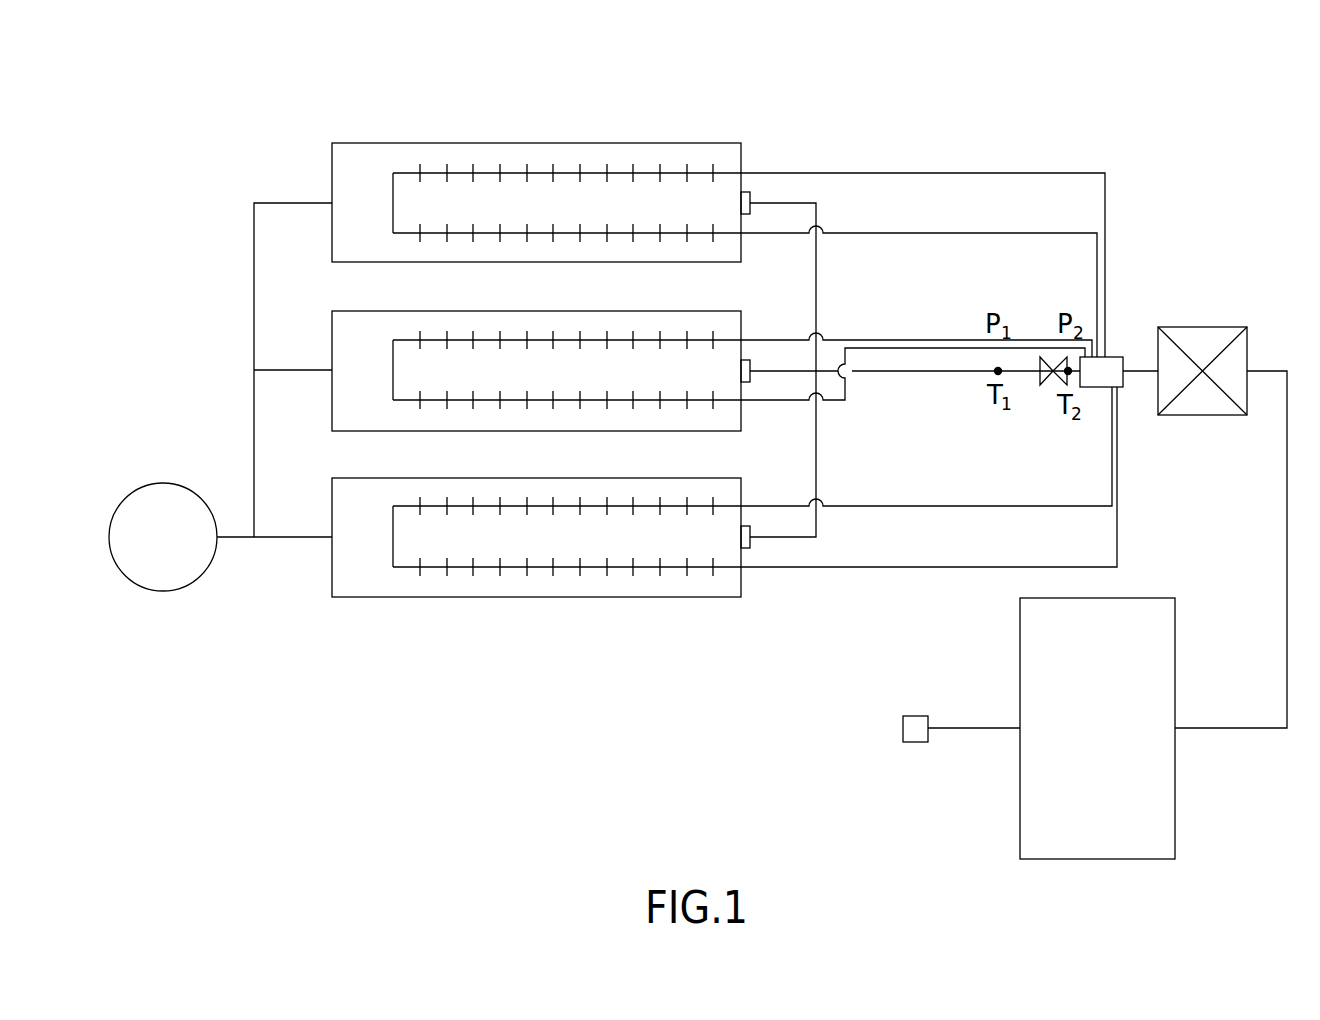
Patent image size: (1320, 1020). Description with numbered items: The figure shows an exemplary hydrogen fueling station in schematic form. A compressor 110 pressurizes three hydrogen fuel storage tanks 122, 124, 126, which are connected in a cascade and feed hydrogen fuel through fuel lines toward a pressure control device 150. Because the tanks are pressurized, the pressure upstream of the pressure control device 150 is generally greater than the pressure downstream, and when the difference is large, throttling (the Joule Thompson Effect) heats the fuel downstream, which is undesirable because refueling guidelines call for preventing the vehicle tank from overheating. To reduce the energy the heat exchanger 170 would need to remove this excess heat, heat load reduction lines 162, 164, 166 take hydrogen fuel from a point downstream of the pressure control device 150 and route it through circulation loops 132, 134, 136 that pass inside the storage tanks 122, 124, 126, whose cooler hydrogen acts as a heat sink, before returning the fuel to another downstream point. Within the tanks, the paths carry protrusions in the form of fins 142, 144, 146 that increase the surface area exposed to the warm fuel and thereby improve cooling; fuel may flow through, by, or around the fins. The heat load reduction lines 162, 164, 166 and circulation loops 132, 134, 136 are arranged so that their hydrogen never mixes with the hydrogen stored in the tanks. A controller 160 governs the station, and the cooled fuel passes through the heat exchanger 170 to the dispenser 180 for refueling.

The compressor 110 is at (163, 483).
The hydrogen fuel storage tank 122 is at (489, 192).
The hydrogen fuel storage tank 124 is at (503, 351).
The hydrogen fuel storage tank 126 is at (501, 521).
The circulation loop 132 is at (536, 202).
The circulation loop 134 is at (536, 371).
The circulation loop 136 is at (536, 537).
The fins 142 is at (489, 169).
The fins 144 is at (515, 337).
The fins 146 is at (542, 503).
The pressure control device 150 is at (1053, 387).
The controller 160 is at (1110, 357).
The heat load reduction line 162 is at (936, 170).
The heat load reduction line 164 is at (889, 337).
The heat load reduction line 166 is at (889, 503).
The heat exchanger 170 is at (1203, 327).
The dispenser 180 is at (1118, 660).